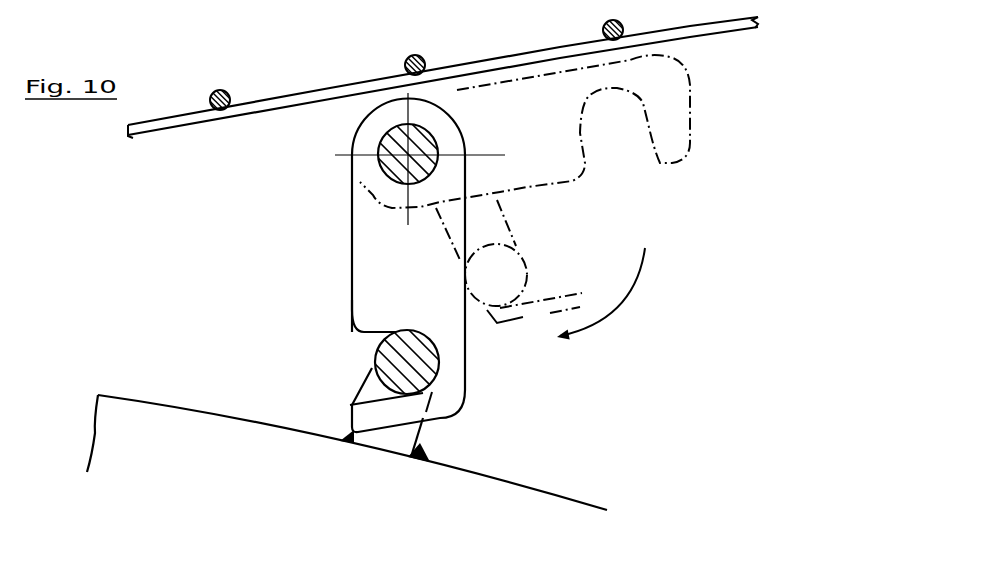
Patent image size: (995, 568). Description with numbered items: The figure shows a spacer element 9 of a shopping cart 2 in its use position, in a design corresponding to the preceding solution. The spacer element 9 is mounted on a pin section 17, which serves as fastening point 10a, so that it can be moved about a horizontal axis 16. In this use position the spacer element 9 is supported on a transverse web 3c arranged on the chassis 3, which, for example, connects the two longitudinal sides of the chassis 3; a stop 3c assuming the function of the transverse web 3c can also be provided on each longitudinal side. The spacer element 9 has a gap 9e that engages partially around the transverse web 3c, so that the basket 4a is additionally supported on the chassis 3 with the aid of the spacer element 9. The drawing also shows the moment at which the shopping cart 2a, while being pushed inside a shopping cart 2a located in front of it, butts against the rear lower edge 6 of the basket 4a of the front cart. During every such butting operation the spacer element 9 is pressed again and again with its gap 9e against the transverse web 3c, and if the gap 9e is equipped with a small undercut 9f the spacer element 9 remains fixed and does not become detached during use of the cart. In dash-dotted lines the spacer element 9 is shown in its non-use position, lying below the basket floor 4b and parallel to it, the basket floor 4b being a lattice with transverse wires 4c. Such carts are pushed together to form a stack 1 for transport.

The stack 1 is at (525, 104).
The shopping cart 2 is at (338, 42).
The shopping cart 2a is at (515, 339).
The chassis 3 is at (182, 422).
The transverse web 3c is at (392, 374).
The basket 4a is at (443, 69).
The basket floor 4b is at (473, 50).
The transverse wire 4c is at (227, 92).
The rear lower edge 6 is at (507, 267).
The spacer element 9 is at (340, 266).
The gap 9e is at (342, 355).
The undercut 9f is at (387, 324).
The fastening point 10a is at (324, 159).
The horizontal axis 16 is at (420, 159).
The pin section 17 is at (397, 160).